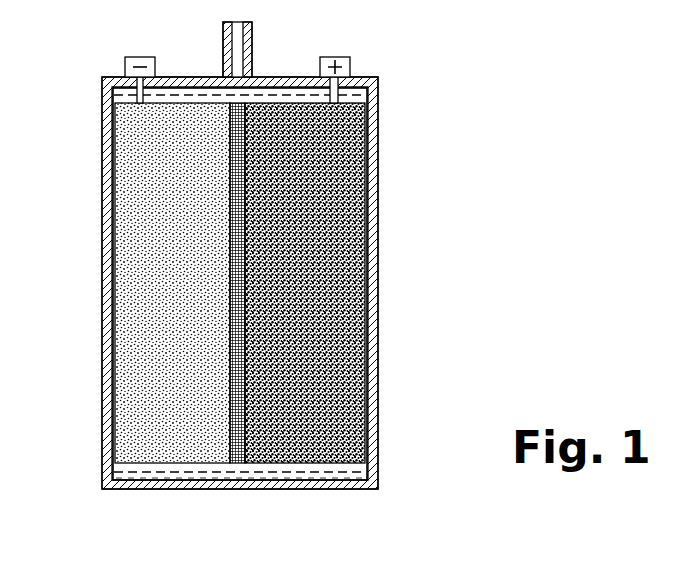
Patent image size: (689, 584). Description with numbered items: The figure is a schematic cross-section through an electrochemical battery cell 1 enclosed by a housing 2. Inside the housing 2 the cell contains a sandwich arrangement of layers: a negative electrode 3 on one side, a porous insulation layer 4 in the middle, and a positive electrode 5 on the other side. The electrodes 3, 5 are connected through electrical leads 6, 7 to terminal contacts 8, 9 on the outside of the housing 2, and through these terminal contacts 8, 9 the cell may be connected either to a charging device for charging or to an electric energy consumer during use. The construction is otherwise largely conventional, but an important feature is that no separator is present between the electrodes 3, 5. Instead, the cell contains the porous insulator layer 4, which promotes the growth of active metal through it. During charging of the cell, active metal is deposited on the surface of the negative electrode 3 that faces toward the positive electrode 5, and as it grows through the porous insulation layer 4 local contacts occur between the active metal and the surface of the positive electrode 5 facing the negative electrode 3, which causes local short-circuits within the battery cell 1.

The electrochemical battery cell 1 is at (397, 207).
The housing 2 is at (370, 257).
The negative electrode 3 is at (147, 348).
The porous insulation layer 4 is at (238, 463).
The positive electrode 5 is at (335, 348).
The electrical lead 6 is at (125, 90).
The electrical lead 7 is at (350, 89).
The terminal contact 8 is at (138, 57).
The terminal contact 9 is at (335, 57).